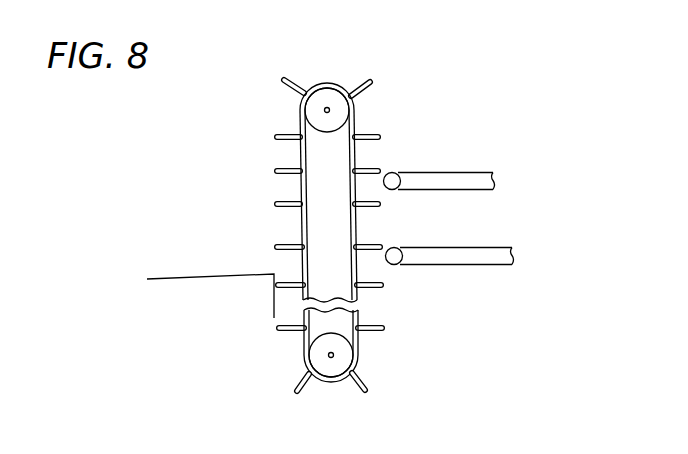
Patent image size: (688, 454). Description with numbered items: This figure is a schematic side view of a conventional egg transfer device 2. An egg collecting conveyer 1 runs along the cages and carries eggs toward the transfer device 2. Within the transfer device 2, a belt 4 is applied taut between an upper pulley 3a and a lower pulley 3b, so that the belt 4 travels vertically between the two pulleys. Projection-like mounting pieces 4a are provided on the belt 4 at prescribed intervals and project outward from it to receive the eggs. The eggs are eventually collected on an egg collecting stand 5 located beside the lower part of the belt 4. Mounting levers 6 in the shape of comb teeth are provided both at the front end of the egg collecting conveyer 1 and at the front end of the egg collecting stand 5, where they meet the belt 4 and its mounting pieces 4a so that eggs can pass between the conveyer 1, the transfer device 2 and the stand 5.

The egg collecting conveyer 1 is at (438, 177).
The transfer device 2 is at (323, 83).
The upper pulley 3a is at (340, 115).
The lower pulley 3b is at (347, 357).
The belt 4 is at (300, 219).
The mounting pieces 4a is at (276, 171).
The egg collecting stand 5 is at (155, 279).
The mounting levers 6 is at (368, 178).